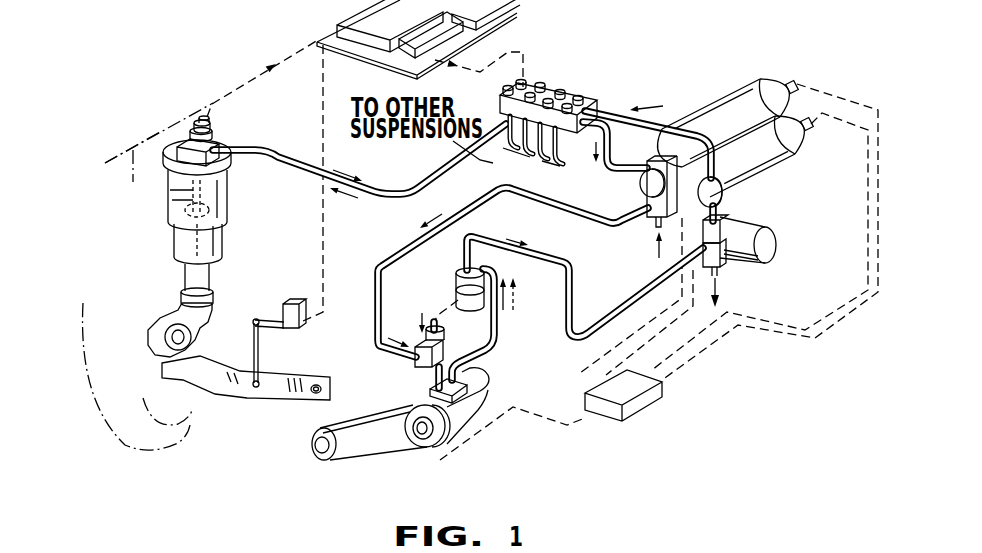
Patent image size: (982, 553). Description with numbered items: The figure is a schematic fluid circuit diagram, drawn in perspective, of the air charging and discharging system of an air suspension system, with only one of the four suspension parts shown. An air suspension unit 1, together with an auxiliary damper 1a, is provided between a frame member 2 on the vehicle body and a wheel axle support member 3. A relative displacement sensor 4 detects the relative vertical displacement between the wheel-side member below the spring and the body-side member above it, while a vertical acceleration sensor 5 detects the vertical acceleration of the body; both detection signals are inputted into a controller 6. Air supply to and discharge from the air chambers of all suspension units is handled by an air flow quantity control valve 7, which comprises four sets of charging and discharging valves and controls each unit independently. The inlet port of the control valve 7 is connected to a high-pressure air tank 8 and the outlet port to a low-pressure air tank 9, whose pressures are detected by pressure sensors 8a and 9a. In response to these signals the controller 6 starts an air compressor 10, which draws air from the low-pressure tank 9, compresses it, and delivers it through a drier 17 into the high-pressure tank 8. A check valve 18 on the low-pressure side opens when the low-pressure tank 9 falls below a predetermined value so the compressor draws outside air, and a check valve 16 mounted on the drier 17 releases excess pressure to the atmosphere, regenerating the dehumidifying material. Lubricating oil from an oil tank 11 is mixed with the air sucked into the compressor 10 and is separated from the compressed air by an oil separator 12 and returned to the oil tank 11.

The air suspension unit 1 is at (165, 218).
The auxiliary damper 1a is at (226, 197).
The frame member 2 is at (162, 133).
The wheel axle support member 3 is at (193, 337).
The relative displacement sensor 4 is at (297, 300).
The vertical acceleration sensor 5 is at (240, 143).
The controller 6 is at (652, 397).
The air flow quantity control valve 7 is at (562, 85).
The high-pressure air tank 8 is at (777, 165).
The pressure sensor 8a is at (810, 136).
The low-pressure air tank 9 is at (733, 84).
The pressure sensor 9a is at (783, 80).
The air compressor 10 is at (482, 397).
The oil tank 11 is at (446, 340).
The oil separator 12 is at (457, 283).
The check valve 16 is at (720, 273).
The drier 17 is at (770, 244).
The check valve 18 is at (652, 228).